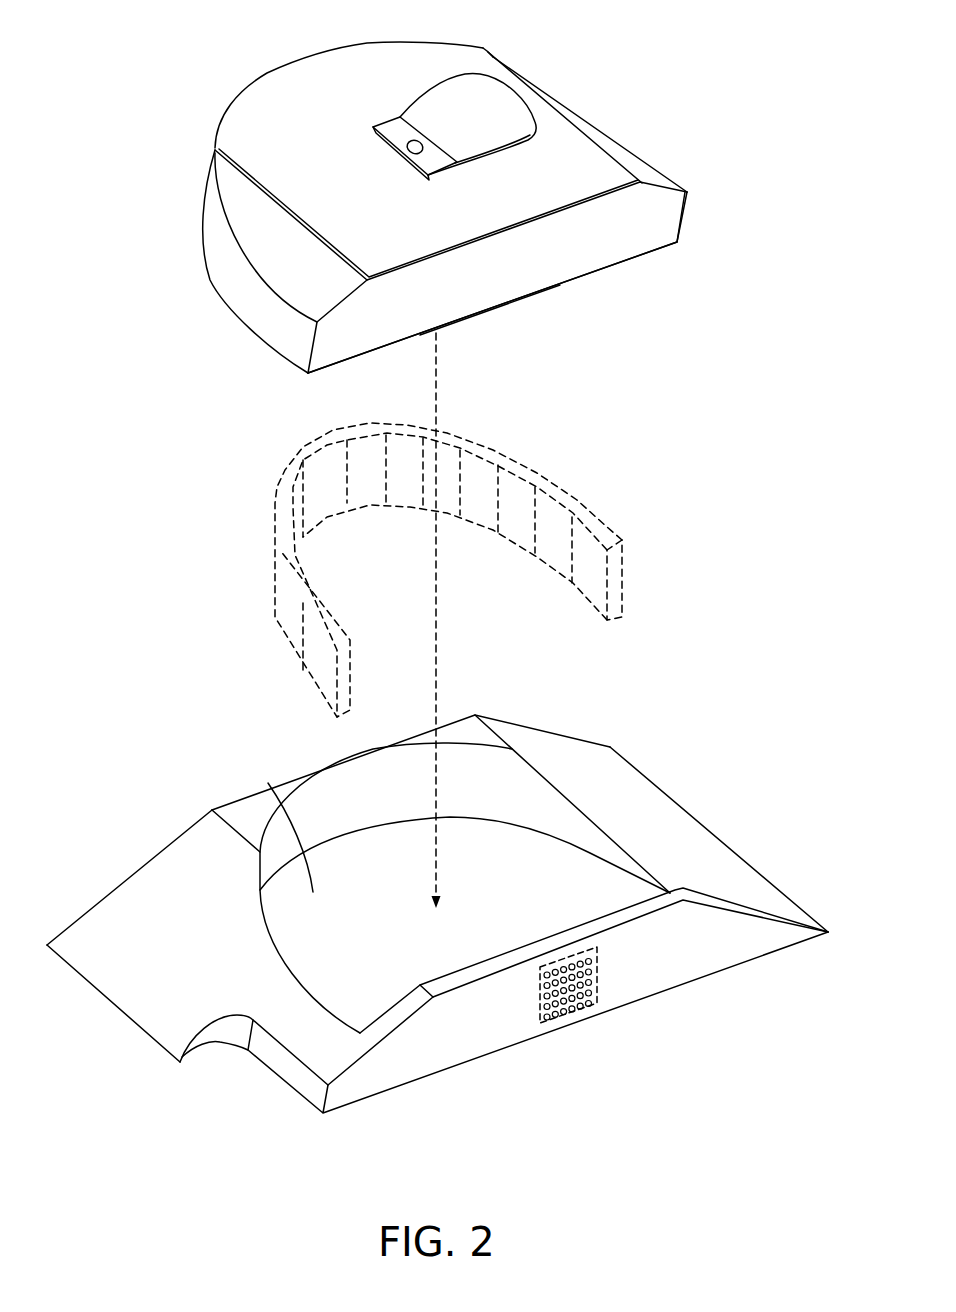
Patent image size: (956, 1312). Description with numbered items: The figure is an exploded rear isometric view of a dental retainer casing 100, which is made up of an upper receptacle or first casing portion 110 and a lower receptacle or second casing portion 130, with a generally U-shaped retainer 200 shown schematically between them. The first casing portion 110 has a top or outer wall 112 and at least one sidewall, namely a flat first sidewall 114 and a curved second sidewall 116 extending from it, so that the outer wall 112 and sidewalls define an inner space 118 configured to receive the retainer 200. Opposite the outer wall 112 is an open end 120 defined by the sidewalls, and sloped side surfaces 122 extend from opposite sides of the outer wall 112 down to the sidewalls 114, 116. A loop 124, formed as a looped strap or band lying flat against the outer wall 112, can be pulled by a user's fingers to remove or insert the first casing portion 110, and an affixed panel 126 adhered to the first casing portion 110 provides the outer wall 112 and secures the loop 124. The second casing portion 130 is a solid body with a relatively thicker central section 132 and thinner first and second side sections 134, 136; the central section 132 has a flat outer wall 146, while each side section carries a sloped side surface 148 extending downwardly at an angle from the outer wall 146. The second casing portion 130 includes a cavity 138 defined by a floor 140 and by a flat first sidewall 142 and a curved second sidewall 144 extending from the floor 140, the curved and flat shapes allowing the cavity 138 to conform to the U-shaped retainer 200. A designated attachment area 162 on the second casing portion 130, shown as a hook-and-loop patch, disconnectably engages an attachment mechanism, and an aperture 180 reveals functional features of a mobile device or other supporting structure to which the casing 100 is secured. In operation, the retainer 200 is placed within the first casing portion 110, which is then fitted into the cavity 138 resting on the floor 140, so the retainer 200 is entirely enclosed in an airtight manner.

The dental retainer casing 100 is at (756, 58).
The first casing portion 110 is at (662, 100).
The outer wall 112 is at (406, 57).
The first sidewall 114 is at (560, 252).
The second sidewall 116 is at (693, 216).
The inner space 118 is at (453, 282).
The open end 120 is at (510, 318).
The sloped side surfaces 122 is at (640, 162).
The loop 124 is at (483, 108).
The affixed panel 126 is at (468, 60).
The retainer 200 is at (608, 525).
The second casing portion 130 is at (702, 728).
The central section 132 is at (270, 768).
The first side section 134 is at (125, 850).
The second side section 136 is at (562, 720).
The cavity 138 is at (550, 862).
The floor 140 is at (313, 892).
The first sidewall 142 is at (389, 992).
The second sidewall 144 is at (332, 797).
The outer wall 146 is at (460, 730).
The sloped side surface 148 is at (705, 845).
The designated attachment area 162 is at (577, 1010).
The aperture 180 is at (215, 1082).